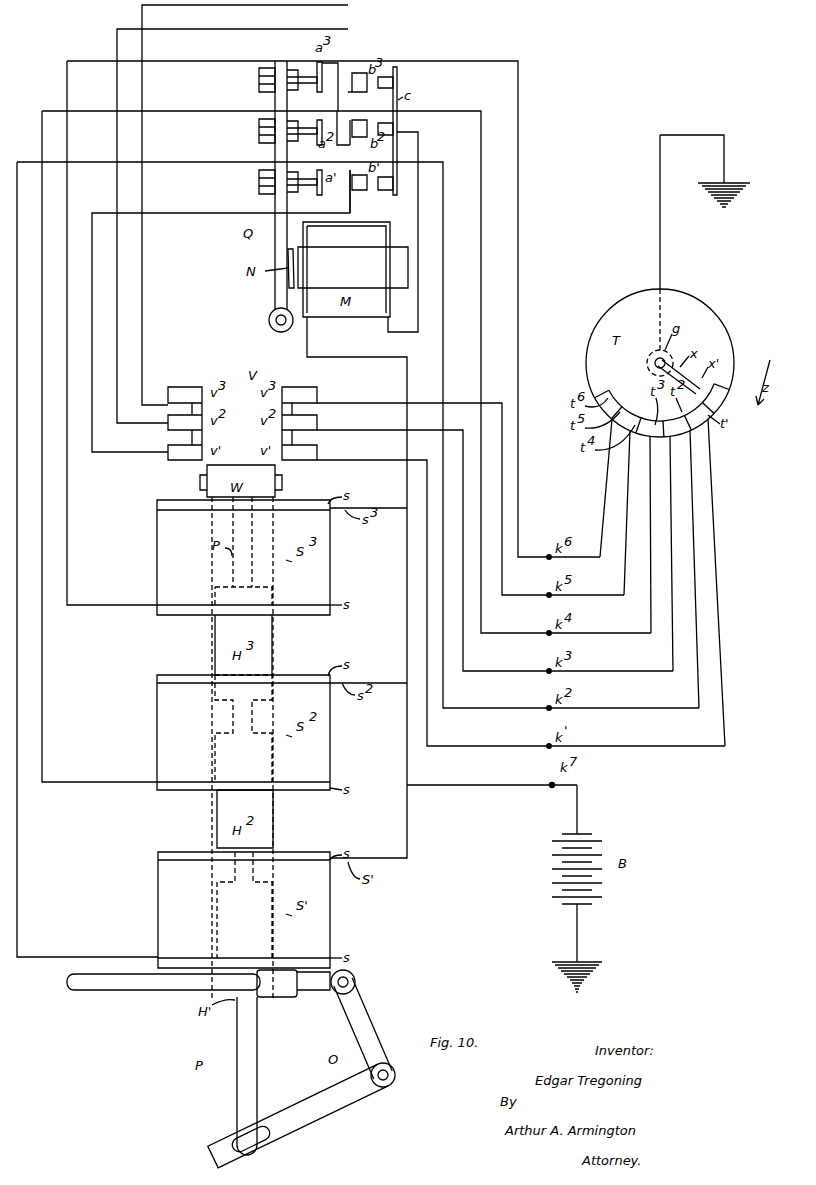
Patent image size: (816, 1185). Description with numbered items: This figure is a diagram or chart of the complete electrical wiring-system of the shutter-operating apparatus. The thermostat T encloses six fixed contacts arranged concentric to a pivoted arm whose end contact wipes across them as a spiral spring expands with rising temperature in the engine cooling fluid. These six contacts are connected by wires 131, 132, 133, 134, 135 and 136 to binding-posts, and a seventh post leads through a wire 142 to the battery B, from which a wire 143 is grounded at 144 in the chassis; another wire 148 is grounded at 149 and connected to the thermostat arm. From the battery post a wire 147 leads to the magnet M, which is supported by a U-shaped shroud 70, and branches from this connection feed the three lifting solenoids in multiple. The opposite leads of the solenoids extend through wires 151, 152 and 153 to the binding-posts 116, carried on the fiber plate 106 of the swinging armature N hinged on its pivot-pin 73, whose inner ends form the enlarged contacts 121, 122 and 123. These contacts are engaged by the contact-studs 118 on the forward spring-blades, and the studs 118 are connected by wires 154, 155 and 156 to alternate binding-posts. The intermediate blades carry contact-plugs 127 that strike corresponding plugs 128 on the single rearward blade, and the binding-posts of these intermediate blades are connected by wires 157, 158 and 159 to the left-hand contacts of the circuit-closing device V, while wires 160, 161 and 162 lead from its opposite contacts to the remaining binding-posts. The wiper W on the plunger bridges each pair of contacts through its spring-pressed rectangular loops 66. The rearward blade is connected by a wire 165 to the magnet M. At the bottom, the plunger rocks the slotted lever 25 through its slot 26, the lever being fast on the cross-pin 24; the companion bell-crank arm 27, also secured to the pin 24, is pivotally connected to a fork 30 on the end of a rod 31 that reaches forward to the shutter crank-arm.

The fiber plate 106 is at (280, 62).
The pivot-pin 73 is at (269, 320).
The binding-posts 116 is at (259, 80).
The contact-studs 118 is at (310, 77).
The contact 121 is at (324, 192).
The contact 122 is at (324, 142).
The contact 123 is at (326, 88).
The contact-plugs 127 is at (357, 143).
The contact-plugs 128 is at (393, 80).
The wire 131 is at (709, 480).
The wire 132 is at (692, 495).
The wire 133 is at (671, 510).
The wire 134 is at (651, 520).
The wire 135 is at (628, 532).
The wire 136 is at (607, 545).
The wire 142 is at (578, 800).
The wire 143 is at (578, 918).
The ground 144 is at (580, 960).
The wire 147 is at (350, 362).
The wire 148 is at (661, 255).
The ground 149 is at (728, 181).
The wire 151 is at (112, 559).
The wire 152 is at (124, 446).
The wire 153 is at (141, 333).
The wire 154 is at (283, 424).
The wire 155 is at (295, 364).
The wire 156 is at (522, 557).
The wire 157 is at (221, 315).
The wire 158 is at (232, 220).
The wire 159 is at (163, 403).
The wire 160 is at (433, 597).
The wire 161 is at (433, 545).
The wire 162 is at (520, 590).
The wire 165 is at (380, 330).
The U-shaped shroud 70 is at (348, 269).
The rectangular loops 66 is at (200, 483).
The rod 31 is at (163, 982).
The fork 30 is at (322, 992).
The bell-crank arm 27 is at (361, 1024).
The cross-pin 24 is at (396, 1076).
The lever 25 is at (298, 1116).
The slot 26 is at (270, 1133).